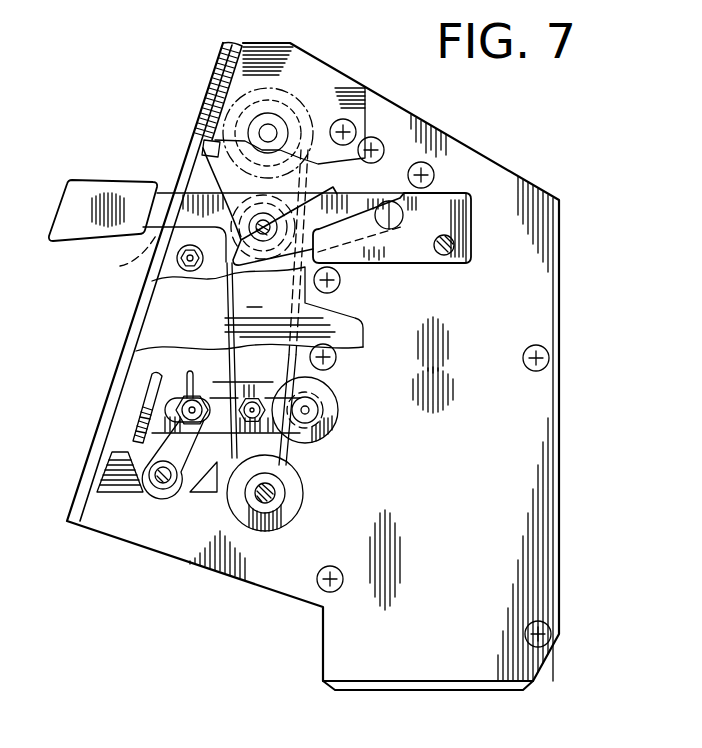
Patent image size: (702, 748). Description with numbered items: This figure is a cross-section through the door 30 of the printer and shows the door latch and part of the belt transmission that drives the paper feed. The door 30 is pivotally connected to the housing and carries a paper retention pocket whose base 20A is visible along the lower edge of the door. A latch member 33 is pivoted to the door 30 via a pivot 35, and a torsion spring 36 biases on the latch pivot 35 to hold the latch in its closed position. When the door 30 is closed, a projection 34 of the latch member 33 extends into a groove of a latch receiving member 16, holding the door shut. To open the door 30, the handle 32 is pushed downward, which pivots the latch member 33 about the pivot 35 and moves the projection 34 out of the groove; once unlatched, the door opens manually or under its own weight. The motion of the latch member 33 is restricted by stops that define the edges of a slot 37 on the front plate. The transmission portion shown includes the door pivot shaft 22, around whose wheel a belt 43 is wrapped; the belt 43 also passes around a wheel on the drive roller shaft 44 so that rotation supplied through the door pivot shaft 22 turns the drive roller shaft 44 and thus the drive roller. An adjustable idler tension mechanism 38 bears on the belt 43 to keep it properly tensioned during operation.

The door 30 is at (559, 295).
The base 20A is at (409, 692).
The latch member 33 is at (163, 196).
The handle 32 is at (70, 205).
The slot 37 is at (125, 256).
The drive roller shaft 44 is at (268, 132).
The torsion spring 36 is at (203, 148).
The pivot 35 is at (238, 270).
The projection 34 is at (414, 220).
The latch receiving member 16 is at (432, 268).
The belt 43 is at (295, 450).
The idler tension mechanism 38 is at (340, 410).
The door pivot shaft 22 is at (278, 497).